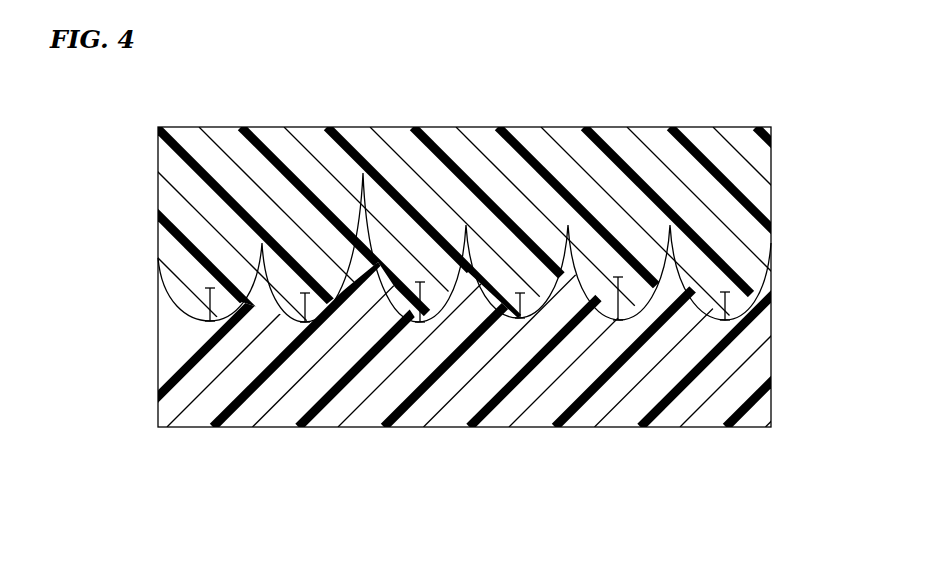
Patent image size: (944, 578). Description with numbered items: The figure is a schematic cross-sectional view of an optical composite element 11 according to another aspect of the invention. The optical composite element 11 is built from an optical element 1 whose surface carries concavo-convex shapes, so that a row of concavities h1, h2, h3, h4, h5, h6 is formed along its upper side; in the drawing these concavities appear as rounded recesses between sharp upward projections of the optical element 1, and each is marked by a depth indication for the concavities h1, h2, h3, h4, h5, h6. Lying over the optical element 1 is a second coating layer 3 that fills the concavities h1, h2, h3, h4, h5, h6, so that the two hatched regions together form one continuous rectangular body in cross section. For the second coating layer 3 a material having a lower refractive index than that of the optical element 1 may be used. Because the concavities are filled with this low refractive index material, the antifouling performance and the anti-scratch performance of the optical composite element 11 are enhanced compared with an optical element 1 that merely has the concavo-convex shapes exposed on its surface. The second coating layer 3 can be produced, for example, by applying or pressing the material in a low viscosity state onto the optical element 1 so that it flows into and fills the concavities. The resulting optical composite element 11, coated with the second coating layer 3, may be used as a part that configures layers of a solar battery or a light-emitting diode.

The optical composite element 11 is at (598, 90).
The second coating layer 3 is at (720, 150).
The optical element 1 is at (784, 364).
The concavity h1 is at (210, 321).
The concavity h2 is at (305, 322).
The concavity h3 is at (420, 322).
The concavity h4 is at (520, 318).
The concavity h5 is at (618, 320).
The concavity h6 is at (725, 320).